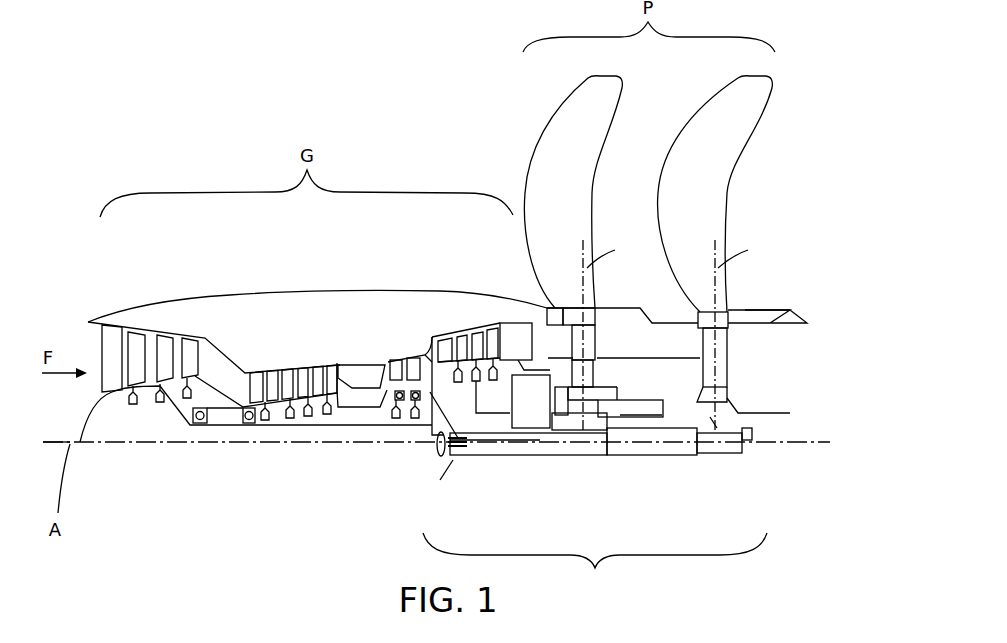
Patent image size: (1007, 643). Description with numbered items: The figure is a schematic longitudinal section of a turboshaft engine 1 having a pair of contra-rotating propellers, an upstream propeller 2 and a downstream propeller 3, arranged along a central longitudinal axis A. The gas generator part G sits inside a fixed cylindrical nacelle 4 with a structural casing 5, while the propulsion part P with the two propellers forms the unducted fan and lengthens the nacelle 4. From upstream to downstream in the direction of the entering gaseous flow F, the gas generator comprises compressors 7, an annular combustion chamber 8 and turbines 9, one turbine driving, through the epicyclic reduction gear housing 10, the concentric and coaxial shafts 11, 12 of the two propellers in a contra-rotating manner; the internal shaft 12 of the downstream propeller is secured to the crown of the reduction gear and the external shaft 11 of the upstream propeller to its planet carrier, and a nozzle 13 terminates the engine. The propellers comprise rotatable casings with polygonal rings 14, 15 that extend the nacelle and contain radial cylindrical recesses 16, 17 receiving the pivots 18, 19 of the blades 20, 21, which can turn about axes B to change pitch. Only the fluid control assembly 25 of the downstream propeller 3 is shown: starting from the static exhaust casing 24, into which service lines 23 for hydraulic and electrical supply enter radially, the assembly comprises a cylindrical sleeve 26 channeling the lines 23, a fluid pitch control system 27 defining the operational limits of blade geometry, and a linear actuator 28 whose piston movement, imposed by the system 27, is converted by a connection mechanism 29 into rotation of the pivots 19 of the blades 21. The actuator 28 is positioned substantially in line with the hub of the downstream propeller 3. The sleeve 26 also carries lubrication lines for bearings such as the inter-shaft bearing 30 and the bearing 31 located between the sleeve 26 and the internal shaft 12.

The turboshaft engine 1 is at (187, 158).
The upstream propeller 2 is at (543, 106).
The downstream propeller 3 is at (696, 106).
The nacelle 4 is at (196, 288).
The structural casing 5 is at (428, 365).
The compressor 7 is at (147, 357).
The annular combustion chamber 8 is at (362, 377).
The turbine 9 is at (420, 378).
The epicyclic gear train housing 10 is at (520, 417).
The external shaft 11 is at (640, 395).
The internal shaft 12 is at (660, 417).
The nozzle 13 is at (793, 316).
The polygonal ring 14 is at (556, 308).
The polygonal ring 15 is at (680, 317).
The radial cylindrical recess 16 is at (598, 312).
The radial cylindrical recess 17 is at (742, 310).
The blade pivot 18 is at (577, 342).
The blade pivot 19 is at (722, 352).
The blade 20 is at (549, 200).
The blade 21 is at (689, 200).
The service lines 23 is at (428, 448).
The static exhaust casing 24 is at (453, 475).
The fluid control assembly 25 is at (571, 508).
The cylindrical sleeve 26 is at (492, 466).
The fluid pitch control system 27 is at (648, 466).
The linear actuator 28 is at (720, 466).
The connection mechanism 29 is at (770, 433).
The inter-shaft bearing 30 is at (563, 415).
The bearing 31 is at (590, 430).